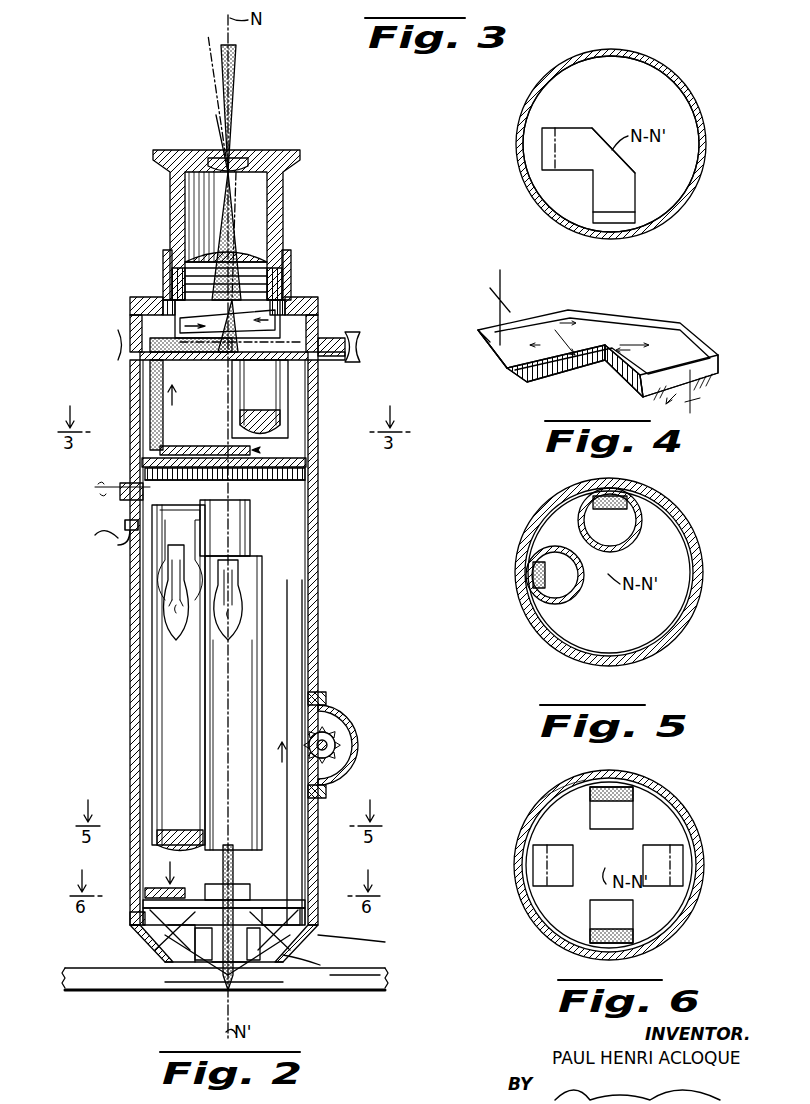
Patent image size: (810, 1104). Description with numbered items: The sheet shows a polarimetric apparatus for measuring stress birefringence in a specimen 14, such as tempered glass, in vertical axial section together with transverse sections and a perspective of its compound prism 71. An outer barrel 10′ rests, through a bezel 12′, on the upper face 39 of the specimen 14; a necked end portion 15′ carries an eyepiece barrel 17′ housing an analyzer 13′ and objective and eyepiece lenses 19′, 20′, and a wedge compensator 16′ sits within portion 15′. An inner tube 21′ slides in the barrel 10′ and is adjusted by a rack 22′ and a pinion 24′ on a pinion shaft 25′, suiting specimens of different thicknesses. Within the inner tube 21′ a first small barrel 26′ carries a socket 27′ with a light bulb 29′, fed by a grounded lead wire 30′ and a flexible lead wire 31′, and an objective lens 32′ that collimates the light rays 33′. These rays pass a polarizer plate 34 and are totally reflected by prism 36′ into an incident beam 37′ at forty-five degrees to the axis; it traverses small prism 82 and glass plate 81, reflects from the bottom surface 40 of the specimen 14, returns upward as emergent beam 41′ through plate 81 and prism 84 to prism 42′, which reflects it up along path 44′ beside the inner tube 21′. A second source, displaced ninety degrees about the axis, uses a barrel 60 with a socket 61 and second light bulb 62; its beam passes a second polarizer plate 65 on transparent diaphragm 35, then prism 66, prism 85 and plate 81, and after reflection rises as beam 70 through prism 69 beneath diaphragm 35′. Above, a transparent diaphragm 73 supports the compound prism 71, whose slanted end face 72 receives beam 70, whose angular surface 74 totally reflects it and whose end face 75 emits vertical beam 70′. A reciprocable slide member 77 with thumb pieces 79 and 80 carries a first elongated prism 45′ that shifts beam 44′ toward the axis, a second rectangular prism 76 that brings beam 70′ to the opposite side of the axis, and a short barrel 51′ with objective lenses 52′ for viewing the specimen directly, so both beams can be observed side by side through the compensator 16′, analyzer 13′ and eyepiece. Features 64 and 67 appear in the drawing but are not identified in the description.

In FIG. 2, the barrel 10′ is at (313, 622).
In FIG. 3, the barrel 10′ is at (700, 183).
In FIG. 5, the barrel 10′ is at (702, 570).
In FIG. 6, the barrel 10′ is at (680, 808).
In FIG. 2, the bezel 12′ is at (320, 942).
In FIG. 2, the analyzer 13′ is at (138, 297).
In FIG. 2, the specimen 14 is at (360, 990).
In FIG. 2, the necked end portion 15′ is at (300, 300).
In FIG. 2, the compensator 16′ is at (286, 266).
In FIG. 2, the eyepiece barrel 17′ is at (280, 205).
In FIG. 2, the objective lens 19′ is at (250, 256).
In FIG. 2, the eyepiece lens 20′ is at (234, 162).
In FIG. 2, the inner tube 21′ is at (137, 855).
In FIG. 5, the inner tube 21′ is at (560, 640).
In FIG. 6, the inner tube 21′ is at (552, 940).
In FIG. 2, the rack 22′ is at (330, 738).
In FIG. 2, the pinion 24′ is at (330, 742).
In FIG. 2, the pinion shaft 25′ is at (326, 746).
In FIG. 2, the first small barrel 26′ is at (180, 730).
In FIG. 5, the first small barrel 26′ is at (545, 598).
In FIG. 2, the socket 27′ is at (162, 575).
In FIG. 2, the light bulb 29′ is at (176, 602).
In FIG. 2, the grounded lead wire 30′ is at (110, 548).
In FIG. 2, the flexible lead wire 31′ is at (120, 490).
In FIG. 2, the objective lens 32′ is at (174, 830).
In FIG. 2, the light rays 33′ is at (168, 868).
In FIG. 5, the light rays 33′ is at (540, 571).
In FIG. 2, the polarizer plate 34 is at (150, 920).
In FIG. 2, the transparent diaphragm 35 is at (290, 892).
In FIG. 6, the diaphragm 35′ is at (553, 822).
In FIG. 2, the prism 36′ is at (165, 945).
In FIG. 6, the prism 36′ is at (552, 882).
In FIG. 2, the incident light beam 37′ is at (186, 955).
In FIG. 6, the incident light beam 37′ is at (538, 867).
In FIG. 2, the upper face 39 is at (75, 972).
In FIG. 2, the bottom surface 40 is at (95, 990).
In FIG. 2, the emergent light beam 41′ is at (250, 965).
In FIG. 2, the prism 42′ is at (290, 906).
In FIG. 6, the prism 42′ is at (655, 852).
In FIG. 2, the path 44′ is at (290, 673).
In FIG. 6, the path 44′ is at (675, 868).
In FIG. 2, the first elongated prism 45′ is at (282, 332).
In FIG. 2, the short barrel 51′ is at (272, 386).
In FIG. 2, the objective lenses 52′ is at (266, 422).
In FIG. 2, the barrel 60 is at (246, 712).
In FIG. 5, the barrel 60 is at (640, 530).
In FIG. 2, the socket 61 is at (240, 530).
In FIG. 2, the second light bulb 62 is at (250, 616).
In FIG. 2, the light rod 64 is at (230, 870).
In FIG. 5, the light rod 64 is at (640, 503).
In FIG. 2, the second polarizer plate 65 is at (240, 896).
In FIG. 2, the prism 66 is at (236, 916).
In FIG. 6, the prism 66 is at (590, 815).
In FIG. 2, the light spot 67 is at (235, 978).
In FIG. 6, the light spot 67 is at (625, 795).
In FIG. 6, the prism 69 is at (628, 910).
In FIG. 2, the emergent beam 70 is at (176, 444).
In FIG. 4, the emergent beam 70 is at (690, 402).
In FIG. 6, the emergent beam 70 is at (630, 935).
In FIG. 2, the vertical beam 70′ is at (155, 378).
In FIG. 4, the vertical beam 70′ is at (500, 285).
In FIG. 2, the compound prism 71 is at (256, 450).
In FIG. 3, the compound prism 71 is at (601, 128).
In FIG. 4, the compound prism 71 is at (544, 312).
In FIG. 3, the end face 72 is at (628, 218).
In FIG. 4, the end face 72 is at (722, 370).
In FIG. 2, the transparent diaphragm 73 is at (260, 470).
In FIG. 3, the transparent diaphragm 73 is at (660, 82).
In FIG. 3, the angular surface 74 is at (630, 168).
In FIG. 4, the angular surface 74 is at (606, 316).
In FIG. 2, the end face 75 is at (146, 462).
In FIG. 3, the end face 75 is at (545, 155).
In FIG. 4, the end face 75 is at (507, 368).
In FIG. 2, the second rectangular prism 76 is at (150, 332).
In FIG. 2, the slide member 77 is at (330, 360).
In FIG. 2, the thumb piece 79 is at (130, 345).
In FIG. 2, the thumb piece 80 is at (360, 345).
In FIG. 2, the glass plate 81 is at (275, 972).
In FIG. 2, the small prism 82 is at (185, 953).
In FIG. 2, the small prism 84 is at (305, 960).
In FIG. 2, the small prism 85 is at (215, 950).